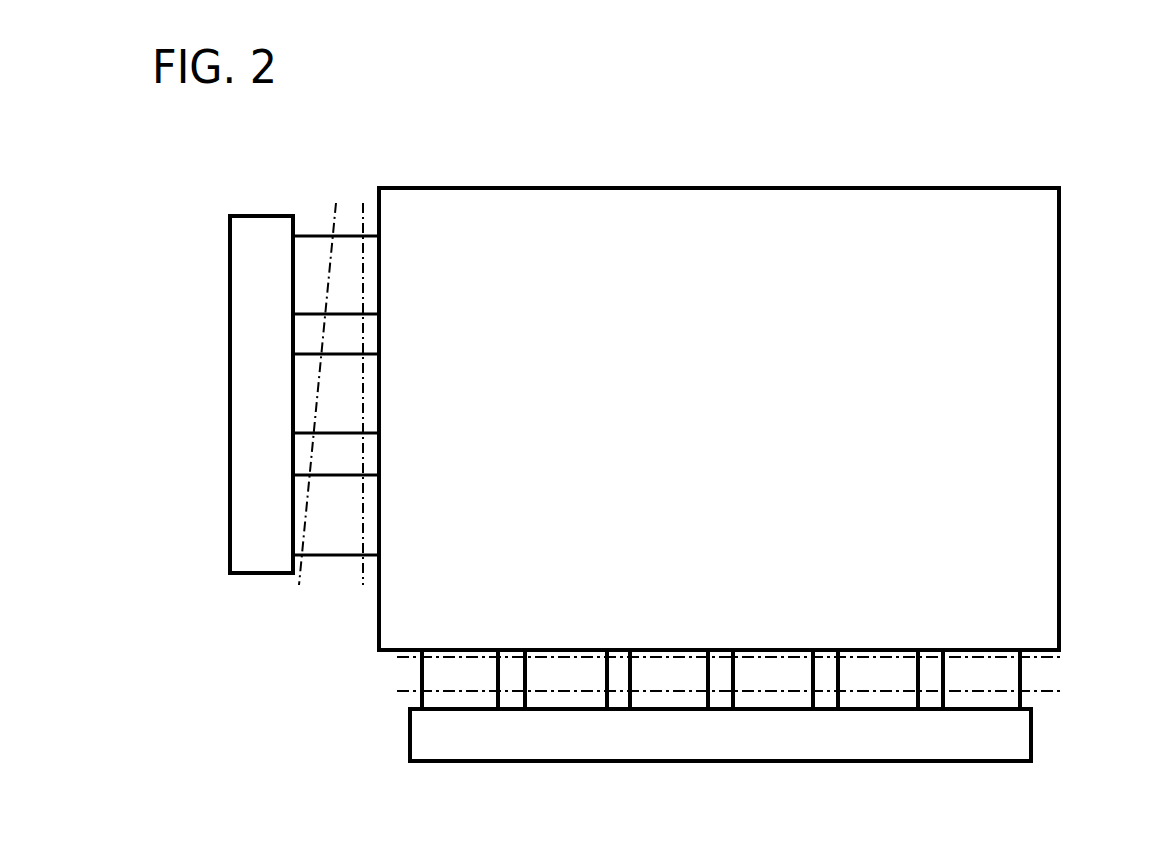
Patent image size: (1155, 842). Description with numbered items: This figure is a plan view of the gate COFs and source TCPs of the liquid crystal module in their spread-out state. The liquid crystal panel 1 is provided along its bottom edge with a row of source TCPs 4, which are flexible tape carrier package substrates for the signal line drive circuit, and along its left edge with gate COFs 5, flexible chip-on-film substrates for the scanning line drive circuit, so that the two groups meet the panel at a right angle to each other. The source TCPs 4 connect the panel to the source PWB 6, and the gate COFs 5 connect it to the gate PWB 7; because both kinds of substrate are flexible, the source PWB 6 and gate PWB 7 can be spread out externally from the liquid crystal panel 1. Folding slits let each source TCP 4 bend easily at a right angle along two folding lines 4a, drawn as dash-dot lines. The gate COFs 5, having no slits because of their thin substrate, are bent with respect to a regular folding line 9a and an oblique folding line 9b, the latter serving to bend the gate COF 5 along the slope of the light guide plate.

The liquid crystal panel 1 is at (1036, 300).
The source TCP 4 is at (970, 664).
The folding line 4a is at (679, 655).
The gate COF 5 is at (345, 246).
The source PWB 6 is at (1016, 738).
The gate PWB 7 is at (265, 230).
The regular folding line 9a is at (363, 584).
The oblique folding line 9b is at (299, 585).